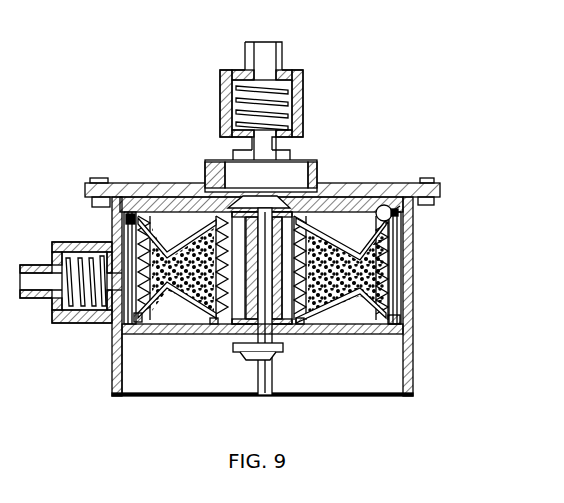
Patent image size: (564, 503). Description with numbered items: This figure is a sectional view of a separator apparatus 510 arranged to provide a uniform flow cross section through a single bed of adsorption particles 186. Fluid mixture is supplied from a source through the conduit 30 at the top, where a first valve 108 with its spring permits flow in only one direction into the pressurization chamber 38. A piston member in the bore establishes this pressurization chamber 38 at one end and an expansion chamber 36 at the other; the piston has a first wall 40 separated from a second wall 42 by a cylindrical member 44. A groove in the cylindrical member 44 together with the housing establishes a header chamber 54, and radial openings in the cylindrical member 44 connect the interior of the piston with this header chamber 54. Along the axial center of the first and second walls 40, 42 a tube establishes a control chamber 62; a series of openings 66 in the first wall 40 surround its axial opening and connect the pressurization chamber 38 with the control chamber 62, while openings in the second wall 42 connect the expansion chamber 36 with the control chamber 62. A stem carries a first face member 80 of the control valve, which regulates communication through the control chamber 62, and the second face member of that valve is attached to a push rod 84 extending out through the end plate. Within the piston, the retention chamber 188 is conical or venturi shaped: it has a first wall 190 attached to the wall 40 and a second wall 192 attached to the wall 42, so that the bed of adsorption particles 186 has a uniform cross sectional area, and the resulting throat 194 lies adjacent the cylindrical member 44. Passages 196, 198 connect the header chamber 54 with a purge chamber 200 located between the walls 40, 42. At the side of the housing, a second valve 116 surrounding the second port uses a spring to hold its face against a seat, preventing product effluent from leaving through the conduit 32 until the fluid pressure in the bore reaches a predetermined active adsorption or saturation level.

The conduit 30 is at (284, 50).
The conduit 32 is at (33, 298).
The expansion chamber 36 is at (163, 371).
The pressurization chamber 38 is at (388, 195).
The first wall 40 is at (158, 210).
The second wall 42 is at (335, 334).
The cylindrical member 44 is at (132, 214).
The header chamber 54 is at (402, 300).
The control chamber 62 is at (240, 310).
The openings 66 is at (238, 215).
The first face member 80 is at (235, 208).
The push rod 84 is at (272, 371).
The first valve 108 is at (232, 84).
The second valve 116 is at (72, 308).
The bed of adsorption particles 186 is at (341, 241).
The conical shaped retention chamber 188 is at (197, 230).
The first wall 190 is at (317, 230).
The second wall 192 is at (197, 308).
The throat 194 is at (365, 236).
The passage 196 is at (386, 333).
The passage 198 is at (399, 214).
The purge chamber 200 is at (378, 321).
The separator apparatus 510 is at (100, 393).